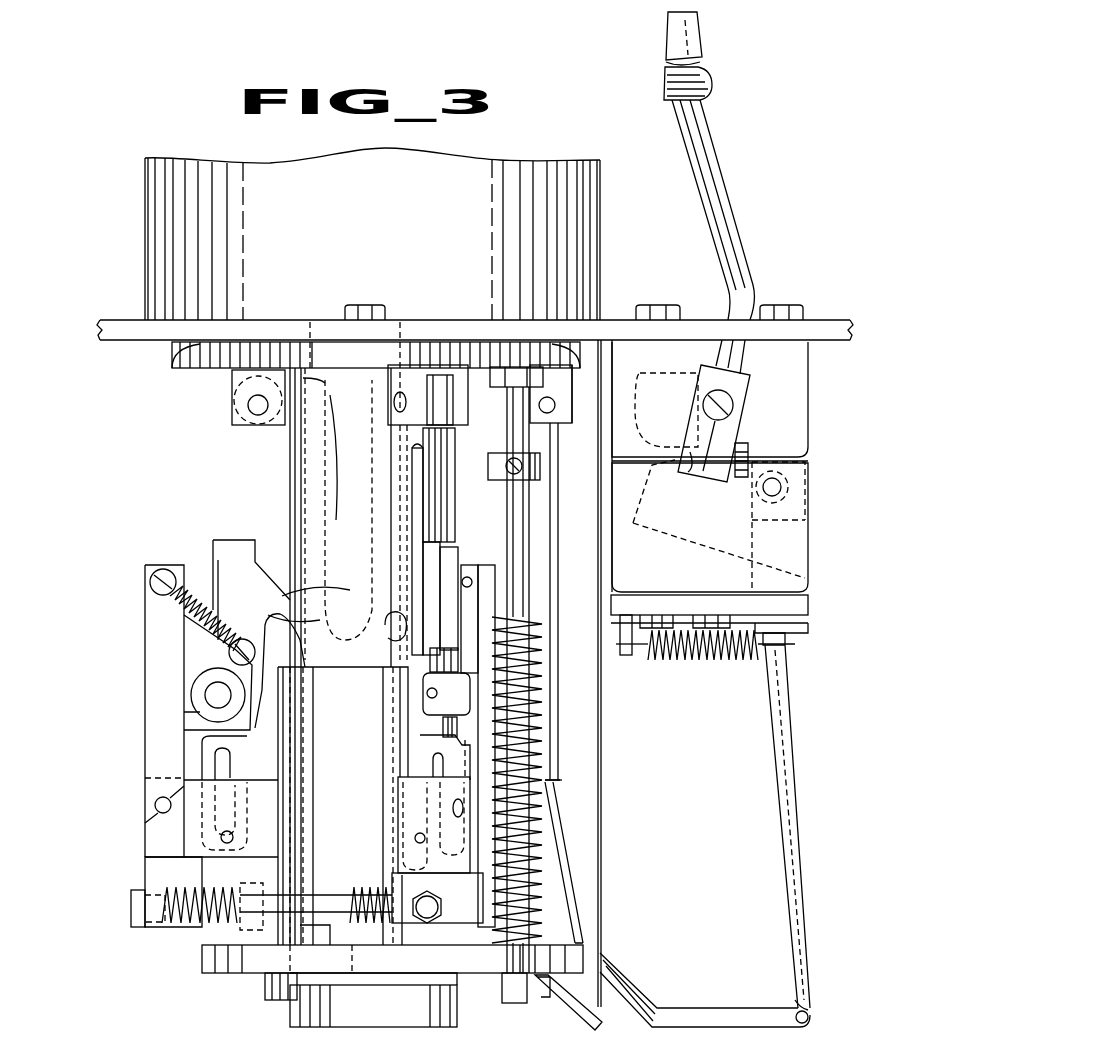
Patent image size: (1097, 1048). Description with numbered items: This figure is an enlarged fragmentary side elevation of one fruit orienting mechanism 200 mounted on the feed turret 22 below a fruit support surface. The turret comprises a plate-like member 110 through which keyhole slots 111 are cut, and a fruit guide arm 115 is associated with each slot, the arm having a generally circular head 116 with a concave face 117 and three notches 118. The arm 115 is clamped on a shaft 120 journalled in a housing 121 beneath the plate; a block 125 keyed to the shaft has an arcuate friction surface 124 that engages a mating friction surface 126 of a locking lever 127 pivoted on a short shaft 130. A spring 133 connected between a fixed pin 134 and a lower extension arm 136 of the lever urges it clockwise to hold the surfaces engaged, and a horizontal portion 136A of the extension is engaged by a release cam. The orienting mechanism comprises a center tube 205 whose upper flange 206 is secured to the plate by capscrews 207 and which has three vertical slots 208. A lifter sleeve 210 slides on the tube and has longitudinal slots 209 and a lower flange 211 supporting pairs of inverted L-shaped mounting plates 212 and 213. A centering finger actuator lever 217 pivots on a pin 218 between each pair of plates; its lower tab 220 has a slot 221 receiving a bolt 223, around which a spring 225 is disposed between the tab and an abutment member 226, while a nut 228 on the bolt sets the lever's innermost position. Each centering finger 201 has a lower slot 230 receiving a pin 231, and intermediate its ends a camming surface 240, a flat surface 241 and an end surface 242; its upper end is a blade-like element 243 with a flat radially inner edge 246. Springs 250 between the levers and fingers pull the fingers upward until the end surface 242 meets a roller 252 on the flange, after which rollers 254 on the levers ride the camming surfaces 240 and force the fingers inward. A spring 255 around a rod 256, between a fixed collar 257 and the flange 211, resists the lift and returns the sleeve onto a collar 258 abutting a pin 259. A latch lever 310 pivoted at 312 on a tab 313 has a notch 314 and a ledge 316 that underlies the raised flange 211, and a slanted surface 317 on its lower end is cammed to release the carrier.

The feed turret 22 is at (413, 316).
The plate-like member 110 is at (465, 332).
The keyhole slot 111 is at (322, 318).
The fruit guide arm 115 is at (708, 185).
The head 116 is at (680, 40).
The concave face 117 is at (700, 60).
The notches 118 is at (665, 70).
The shaft 120 is at (722, 405).
The housing 121 is at (767, 421).
The arcuate friction surface 124 is at (542, 421).
The block 125 is at (680, 372).
The friction surface 126 is at (700, 473).
The locking lever 127 is at (720, 548).
The short shaft 130 is at (780, 487).
The spring 133 is at (722, 658).
The fixed pin 134 is at (630, 656).
The lower extension arm 136 is at (782, 751).
The horizontal portion 136A is at (796, 1004).
The fruit orienting mechanism 200 is at (279, 464).
The centering finger 201 is at (305, 348).
The center tube 205 is at (335, 453).
The upper flange 206 is at (180, 355).
The capscrew 207 is at (365, 318).
The vertical slot 208 is at (412, 480).
The longitudinal slot 209 is at (420, 736).
The lifter sleeve 210 is at (333, 715).
The lower flange 211 is at (205, 957).
The mounting plate 212 is at (160, 773).
The mounting plate 213 is at (165, 840).
The centering finger actuator lever 217 is at (158, 638).
The pin 218 is at (155, 803).
The tab 220 is at (150, 872).
The slot 221 is at (494, 960).
The bolt 223 is at (133, 903).
The spring 225 is at (195, 920).
The abutment member 226 is at (315, 928).
The nut 228 is at (282, 895).
The slot 230 is at (228, 772).
The pin 231 is at (226, 845).
The camming surface 240 is at (225, 660).
The flat surface 241 is at (452, 562).
The end surface 242 is at (440, 545).
The blade-like element 243 is at (410, 455).
The radially inner edge 246 is at (318, 390).
The spring 250 is at (180, 616).
The roller 252 is at (250, 425).
The roller 254 is at (200, 693).
The spring 255 is at (538, 652).
The rod 256 is at (516, 515).
The fixed collar 257 is at (535, 468).
The collar 258 is at (362, 986).
The pin 259 is at (268, 995).
The latch lever 310 is at (603, 727).
The pivot 312 is at (555, 400).
The tab 313 is at (572, 412).
The notch 314 is at (558, 778).
The ledge 316 is at (560, 782).
The slanted surface 317 is at (565, 1000).